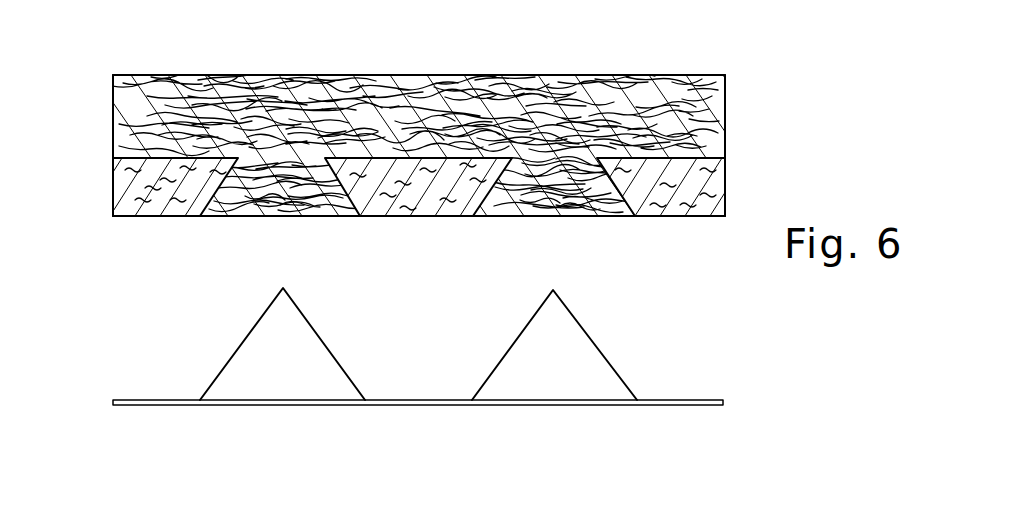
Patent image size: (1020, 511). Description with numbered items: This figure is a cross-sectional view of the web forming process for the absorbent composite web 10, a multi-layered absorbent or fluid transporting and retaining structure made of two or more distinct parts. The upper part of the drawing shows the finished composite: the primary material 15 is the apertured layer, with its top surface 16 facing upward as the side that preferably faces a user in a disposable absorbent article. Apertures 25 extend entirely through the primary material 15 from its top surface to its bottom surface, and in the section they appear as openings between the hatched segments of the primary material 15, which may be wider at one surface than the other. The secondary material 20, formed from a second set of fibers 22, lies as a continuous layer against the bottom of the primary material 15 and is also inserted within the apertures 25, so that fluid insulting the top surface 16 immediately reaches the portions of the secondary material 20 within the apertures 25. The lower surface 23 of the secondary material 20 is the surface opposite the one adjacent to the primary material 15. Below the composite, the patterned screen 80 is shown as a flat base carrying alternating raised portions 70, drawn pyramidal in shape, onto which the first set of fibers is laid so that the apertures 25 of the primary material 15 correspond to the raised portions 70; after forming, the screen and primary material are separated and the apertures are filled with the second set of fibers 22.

The absorbent composite web 10 is at (747, 405).
The primary material 15 is at (170, 205).
The top surface 16 is at (127, 217).
The secondary material 20 is at (143, 93).
The second set of fibers 22 is at (310, 205).
The lower surface 23 is at (247, 75).
The apertures 25 is at (287, 217).
The raised portions 70 is at (317, 332).
The patterned screen 80 is at (130, 400).